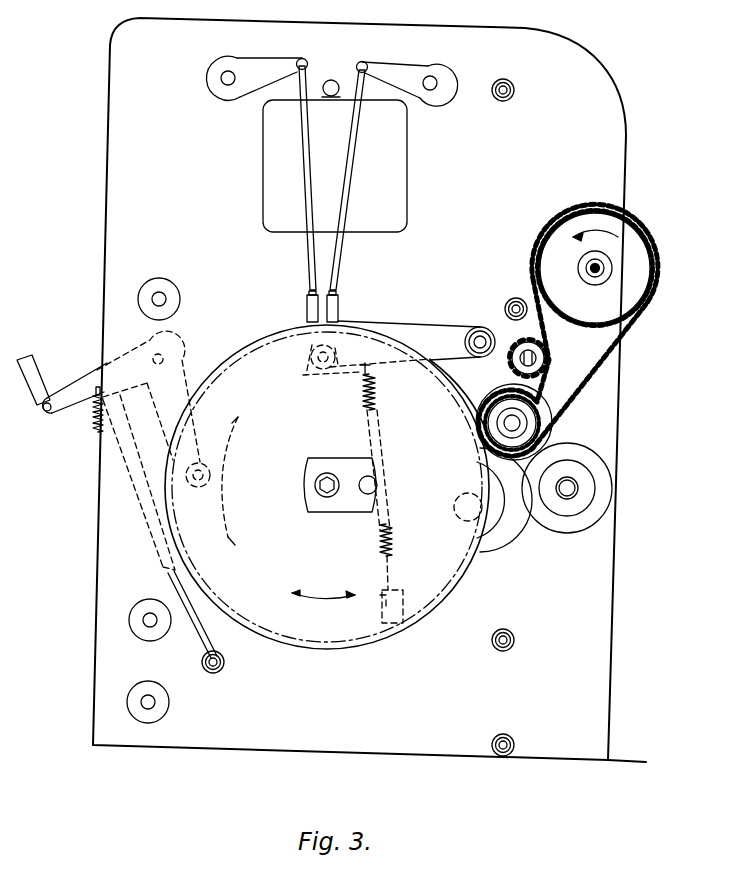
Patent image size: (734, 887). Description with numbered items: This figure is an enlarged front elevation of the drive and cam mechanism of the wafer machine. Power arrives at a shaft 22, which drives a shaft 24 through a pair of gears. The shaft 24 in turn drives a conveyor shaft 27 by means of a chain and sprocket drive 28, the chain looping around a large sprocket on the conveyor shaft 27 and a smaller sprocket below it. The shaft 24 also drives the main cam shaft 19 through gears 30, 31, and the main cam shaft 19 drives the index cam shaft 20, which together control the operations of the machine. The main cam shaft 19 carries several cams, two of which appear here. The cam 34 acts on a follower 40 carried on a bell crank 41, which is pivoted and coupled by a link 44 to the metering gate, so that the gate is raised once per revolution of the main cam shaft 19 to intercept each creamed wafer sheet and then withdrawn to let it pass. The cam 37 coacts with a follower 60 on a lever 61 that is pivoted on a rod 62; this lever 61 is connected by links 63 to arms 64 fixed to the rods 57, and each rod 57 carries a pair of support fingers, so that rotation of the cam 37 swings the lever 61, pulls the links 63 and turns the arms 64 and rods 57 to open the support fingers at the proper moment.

The main cam shaft 19 is at (320, 485).
The index cam shaft 20 is at (464, 509).
The shaft 22 is at (571, 480).
The shaft 24 is at (506, 425).
The conveyor shaft 27 is at (590, 268).
The chain and sprocket drive 28 is at (583, 375).
The gear 30 is at (492, 395).
The gear 31 is at (420, 590).
The cam 34 is at (218, 518).
The cam 37 is at (301, 379).
The follower 40 is at (198, 488).
The bell crank 41 is at (73, 387).
The link 44 is at (30, 372).
The rod 57 is at (223, 79).
The follower 60 is at (366, 366).
The lever 61 is at (425, 322).
The rod 62 is at (481, 337).
The links 63 is at (350, 152).
The arms 64 is at (266, 62).